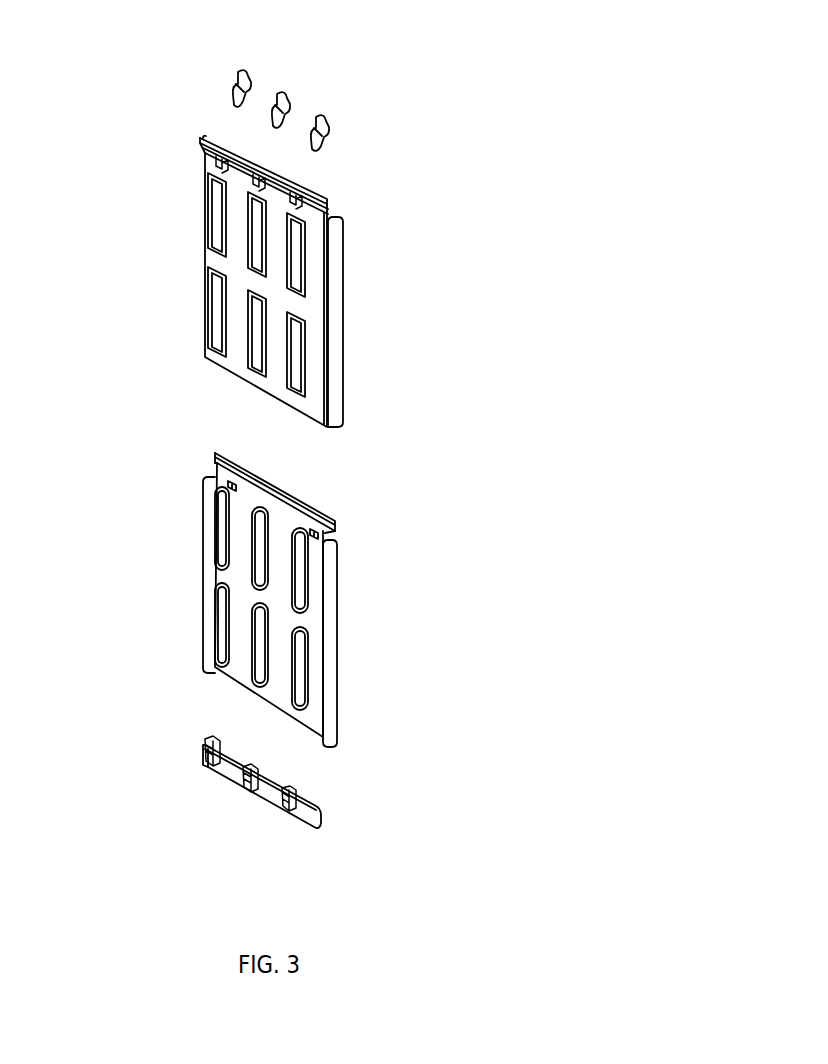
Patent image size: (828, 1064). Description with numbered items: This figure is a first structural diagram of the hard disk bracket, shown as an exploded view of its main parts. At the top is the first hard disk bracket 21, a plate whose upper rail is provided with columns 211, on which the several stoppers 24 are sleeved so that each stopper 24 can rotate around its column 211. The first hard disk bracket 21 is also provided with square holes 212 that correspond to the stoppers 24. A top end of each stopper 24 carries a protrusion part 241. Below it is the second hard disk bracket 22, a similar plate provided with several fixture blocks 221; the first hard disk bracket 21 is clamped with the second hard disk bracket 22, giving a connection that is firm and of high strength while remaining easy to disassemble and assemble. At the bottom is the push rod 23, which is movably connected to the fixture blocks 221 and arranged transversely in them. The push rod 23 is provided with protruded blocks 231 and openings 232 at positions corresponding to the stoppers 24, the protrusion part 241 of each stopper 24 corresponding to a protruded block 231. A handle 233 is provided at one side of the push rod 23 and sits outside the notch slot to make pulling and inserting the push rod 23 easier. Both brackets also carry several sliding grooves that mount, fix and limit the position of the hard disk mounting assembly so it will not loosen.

The first hard disk bracket 21 is at (313, 315).
The columns 211 is at (283, 172).
The square holes 212 is at (322, 200).
The second hard disk bracket 22 is at (310, 627).
The fixture blocks 221 is at (317, 512).
The push rod 23 is at (313, 805).
The protruded blocks 231 is at (297, 790).
The openings 232 is at (247, 787).
The handle 233 is at (210, 742).
The stoppers 24 is at (283, 100).
The protrusion part 241 is at (313, 120).